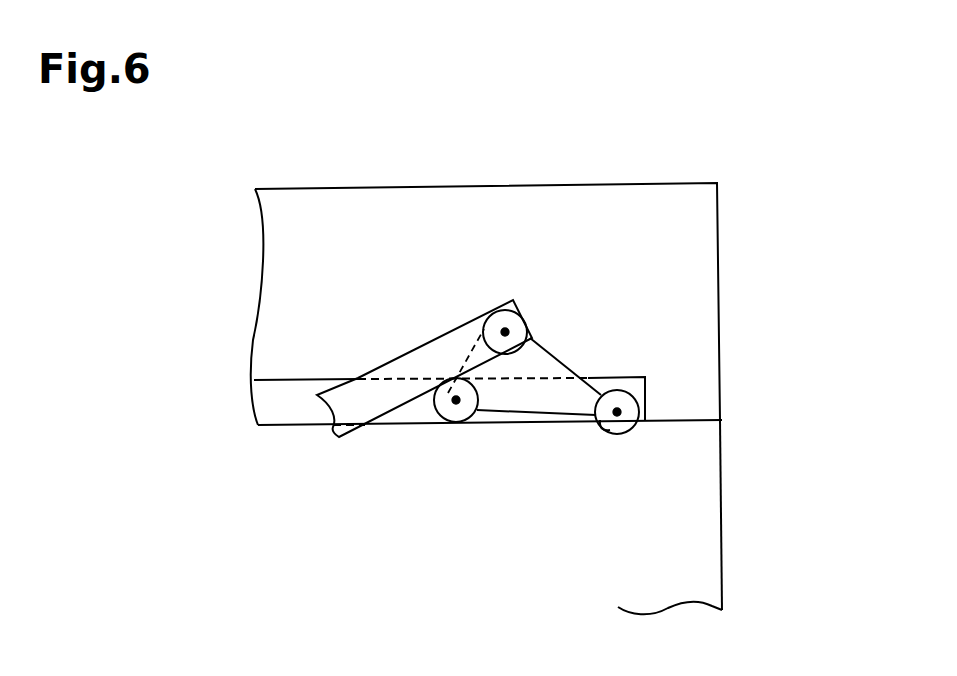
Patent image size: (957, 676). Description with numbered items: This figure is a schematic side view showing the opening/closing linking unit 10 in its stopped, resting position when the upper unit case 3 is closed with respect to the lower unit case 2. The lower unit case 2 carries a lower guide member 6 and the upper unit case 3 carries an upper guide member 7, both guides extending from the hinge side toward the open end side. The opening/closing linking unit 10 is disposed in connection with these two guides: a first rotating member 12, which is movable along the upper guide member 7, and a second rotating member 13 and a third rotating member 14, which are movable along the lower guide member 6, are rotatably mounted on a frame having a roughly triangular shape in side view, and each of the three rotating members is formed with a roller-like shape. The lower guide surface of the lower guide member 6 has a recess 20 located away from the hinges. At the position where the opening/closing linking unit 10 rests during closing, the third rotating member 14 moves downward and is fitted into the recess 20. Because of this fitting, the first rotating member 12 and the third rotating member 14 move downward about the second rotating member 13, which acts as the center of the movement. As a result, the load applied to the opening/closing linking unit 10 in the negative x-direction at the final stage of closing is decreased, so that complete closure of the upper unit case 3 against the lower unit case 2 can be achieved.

The lower unit case 2 is at (695, 568).
The upper unit case 3 is at (690, 242).
The lower guide member 6 is at (293, 397).
The upper guide member 7 is at (427, 362).
The opening/closing linking unit 10 is at (567, 355).
The first rotating member 12 is at (508, 317).
The second rotating member 13 is at (457, 417).
The third rotating member 14 is at (622, 420).
The recess 20 is at (597, 425).